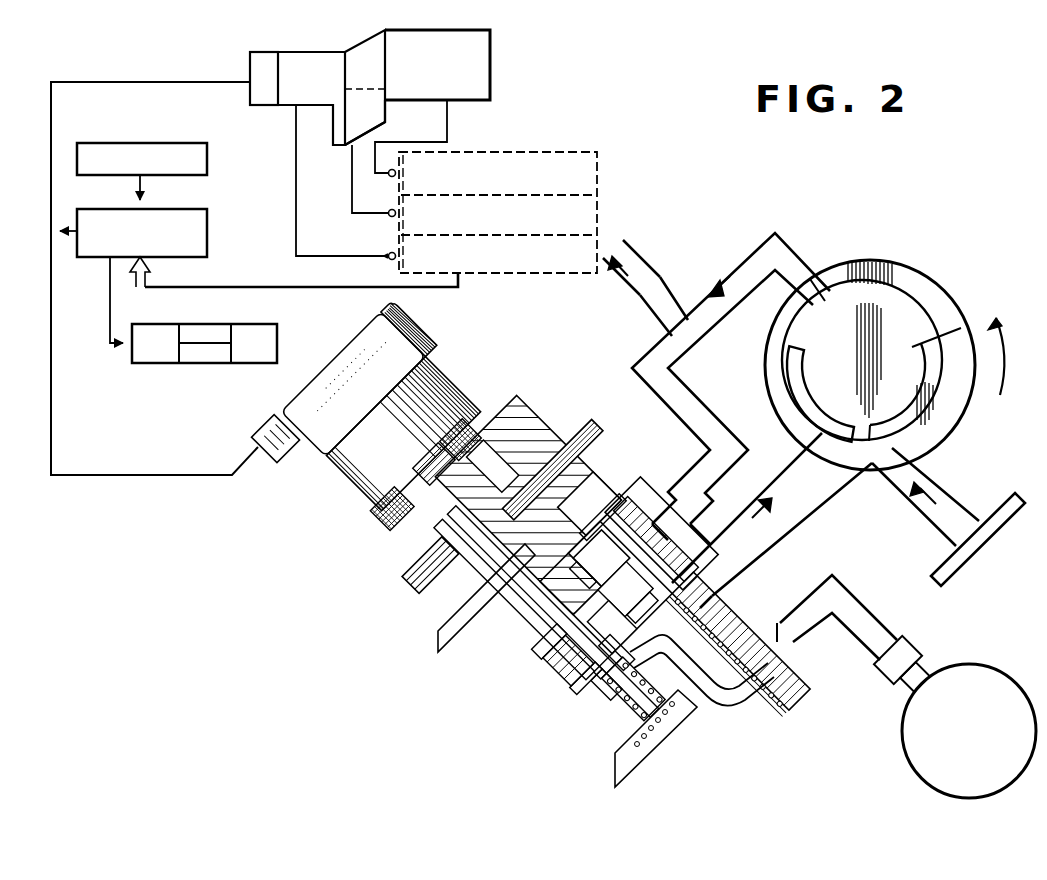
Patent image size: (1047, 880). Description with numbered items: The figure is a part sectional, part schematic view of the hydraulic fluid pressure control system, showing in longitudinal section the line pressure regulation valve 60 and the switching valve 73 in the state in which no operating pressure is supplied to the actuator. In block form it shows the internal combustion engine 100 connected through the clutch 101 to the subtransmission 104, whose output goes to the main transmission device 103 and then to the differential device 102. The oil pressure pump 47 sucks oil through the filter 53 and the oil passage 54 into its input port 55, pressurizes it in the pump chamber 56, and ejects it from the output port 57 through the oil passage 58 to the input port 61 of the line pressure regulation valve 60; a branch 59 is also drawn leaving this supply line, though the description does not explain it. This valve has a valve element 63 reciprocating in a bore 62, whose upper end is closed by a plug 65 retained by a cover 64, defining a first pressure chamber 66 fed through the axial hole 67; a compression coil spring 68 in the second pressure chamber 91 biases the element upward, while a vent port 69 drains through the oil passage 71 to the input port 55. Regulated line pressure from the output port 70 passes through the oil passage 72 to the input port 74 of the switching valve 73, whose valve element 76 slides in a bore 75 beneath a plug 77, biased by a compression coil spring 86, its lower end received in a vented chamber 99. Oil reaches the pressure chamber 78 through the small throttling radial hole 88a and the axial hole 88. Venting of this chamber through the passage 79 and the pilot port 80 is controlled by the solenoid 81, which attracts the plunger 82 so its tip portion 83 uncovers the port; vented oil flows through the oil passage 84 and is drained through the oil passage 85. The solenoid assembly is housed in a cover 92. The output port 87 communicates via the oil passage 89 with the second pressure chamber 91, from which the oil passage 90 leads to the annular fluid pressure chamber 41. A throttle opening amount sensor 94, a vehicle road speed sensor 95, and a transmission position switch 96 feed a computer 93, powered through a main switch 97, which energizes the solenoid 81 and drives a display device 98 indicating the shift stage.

The annular fluid pressure chamber 41 is at (997, 676).
The oil pressure pump 47 is at (908, 266).
The filter 53 is at (1000, 497).
The oil passage 54 is at (962, 503).
The input port 55 is at (862, 440).
The pump chamber 56 is at (920, 396).
The output port 57 is at (932, 318).
The oil passage 58 is at (794, 264).
The exhaust branch pipe 59 is at (645, 268).
The line pressure regulation valve 60 is at (642, 481).
The input port 61 is at (670, 544).
The bore 62 is at (606, 587).
The valve element 63 is at (642, 516).
The cover 64 is at (566, 424).
The plug 65 is at (610, 486).
The first pressure chamber 66 is at (624, 496).
The axial hole 67 is at (626, 602).
The compression coil spring 68 is at (730, 610).
The vent port 69 is at (714, 574).
The output port 70 is at (626, 576).
The oil passage 71 is at (793, 490).
The oil passage 72 is at (622, 604).
The switching valve 73 is at (547, 672).
The input port 74 is at (621, 698).
The bore 75 is at (572, 669).
The valve element 76 is at (550, 646).
The plug 77 is at (512, 590).
The pressure chamber 78 is at (536, 618).
The passage 79 is at (604, 549).
The pilot port 80 is at (505, 451).
The solenoid 81 is at (394, 519).
The plunger 82 is at (426, 458).
The tip portion 83 is at (420, 477).
The oil passage 84 is at (480, 553).
The oil passage 85 is at (459, 632).
The compression coil spring 86 is at (682, 716).
The output port 87 is at (626, 716).
The axial hole 88 is at (586, 690).
The radial hole 88a is at (575, 700).
The oil passage 89 is at (719, 696).
The oil passage 90 is at (909, 658).
The second pressure chamber 91 is at (775, 626).
The cover 92 is at (443, 382).
The computer 93 is at (194, 214).
The throttle opening amount sensor 94 is at (580, 152).
The vehicle road speed sensor 95 is at (597, 208).
The transmission position switch 96 is at (570, 274).
The main switch 97 is at (194, 143).
The display device 98 is at (190, 363).
The chamber 99 is at (669, 764).
The internal combustion engine 100 is at (484, 83).
The clutch 101 is at (362, 48).
The differential device 102 is at (375, 120).
The main transmission device 103 is at (313, 98).
The subtransmission 104 is at (267, 57).